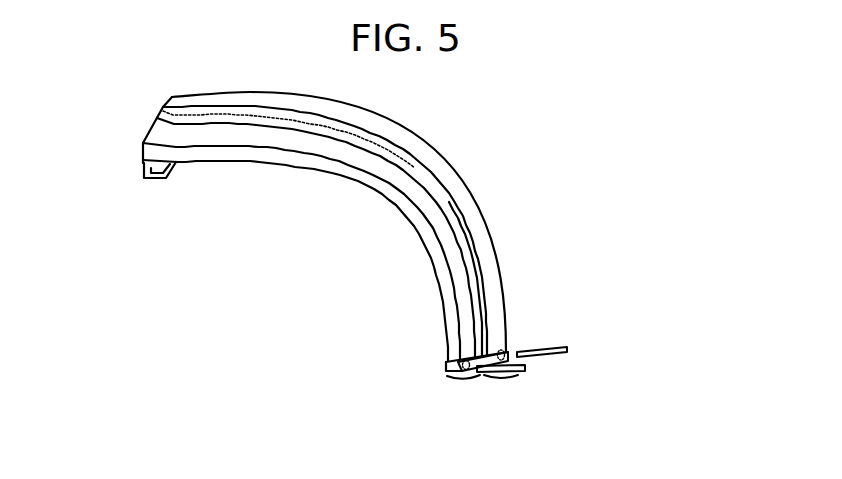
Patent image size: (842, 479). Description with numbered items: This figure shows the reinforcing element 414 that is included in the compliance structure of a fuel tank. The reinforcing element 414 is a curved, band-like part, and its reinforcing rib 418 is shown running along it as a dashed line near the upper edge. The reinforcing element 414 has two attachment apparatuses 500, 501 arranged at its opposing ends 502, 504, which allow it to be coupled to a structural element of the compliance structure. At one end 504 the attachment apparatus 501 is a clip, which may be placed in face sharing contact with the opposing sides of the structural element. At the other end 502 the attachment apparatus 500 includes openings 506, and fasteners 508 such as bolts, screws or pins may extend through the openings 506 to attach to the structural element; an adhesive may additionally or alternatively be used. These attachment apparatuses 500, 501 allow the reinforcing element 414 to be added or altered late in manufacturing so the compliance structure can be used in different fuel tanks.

The reinforcing element 414 is at (612, 163).
The reinforcing rib 418 is at (191, 104).
The end of reinforcing element 504 is at (120, 151).
The attachment apparatus 501 is at (157, 186).
The attachment apparatus 500 is at (482, 376).
The openings 506 is at (504, 349).
The end of reinforcing element 502 is at (518, 383).
The fasteners 508 is at (551, 358).